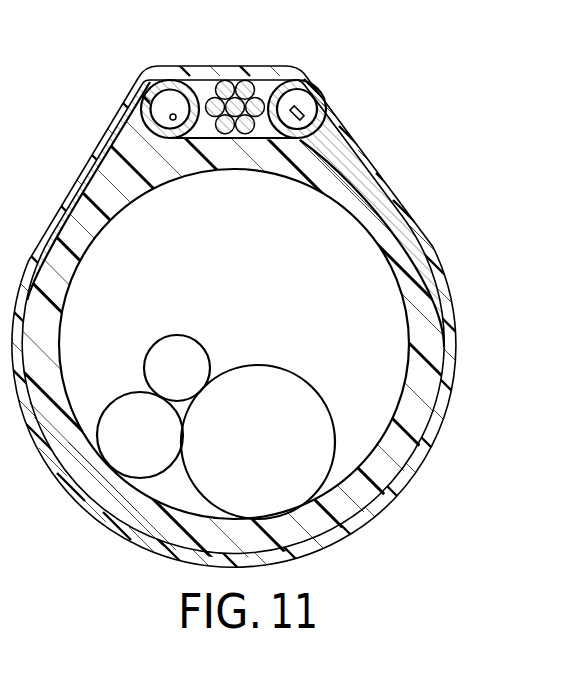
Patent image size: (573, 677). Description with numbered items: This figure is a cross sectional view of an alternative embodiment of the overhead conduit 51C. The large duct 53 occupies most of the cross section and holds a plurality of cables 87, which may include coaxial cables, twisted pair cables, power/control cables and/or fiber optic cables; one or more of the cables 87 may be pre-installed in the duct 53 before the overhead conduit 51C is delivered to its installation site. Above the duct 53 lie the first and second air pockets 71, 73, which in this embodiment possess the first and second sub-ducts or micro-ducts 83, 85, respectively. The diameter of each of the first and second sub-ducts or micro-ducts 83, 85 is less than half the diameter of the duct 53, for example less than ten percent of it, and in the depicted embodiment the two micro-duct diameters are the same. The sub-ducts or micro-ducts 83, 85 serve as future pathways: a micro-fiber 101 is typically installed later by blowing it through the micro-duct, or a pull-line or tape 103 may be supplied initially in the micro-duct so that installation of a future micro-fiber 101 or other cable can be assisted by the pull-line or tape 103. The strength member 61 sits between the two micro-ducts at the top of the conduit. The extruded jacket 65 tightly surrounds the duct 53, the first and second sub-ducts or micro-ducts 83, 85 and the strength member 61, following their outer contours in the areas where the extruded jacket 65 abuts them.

The overhead conduit 51C is at (482, 122).
The duct 53 is at (420, 278).
The strength member 61 is at (277, 72).
The extruded jacket 65 is at (407, 213).
The first air pocket 71 is at (340, 152).
The second air pocket 73 is at (127, 147).
The first sub-duct or micro-duct 83 is at (305, 118).
The second sub-duct or micro-duct 85 is at (167, 100).
The cables 87 is at (123, 413).
The micro-fiber 101 is at (170, 117).
The pull-line or tape 103 is at (300, 104).